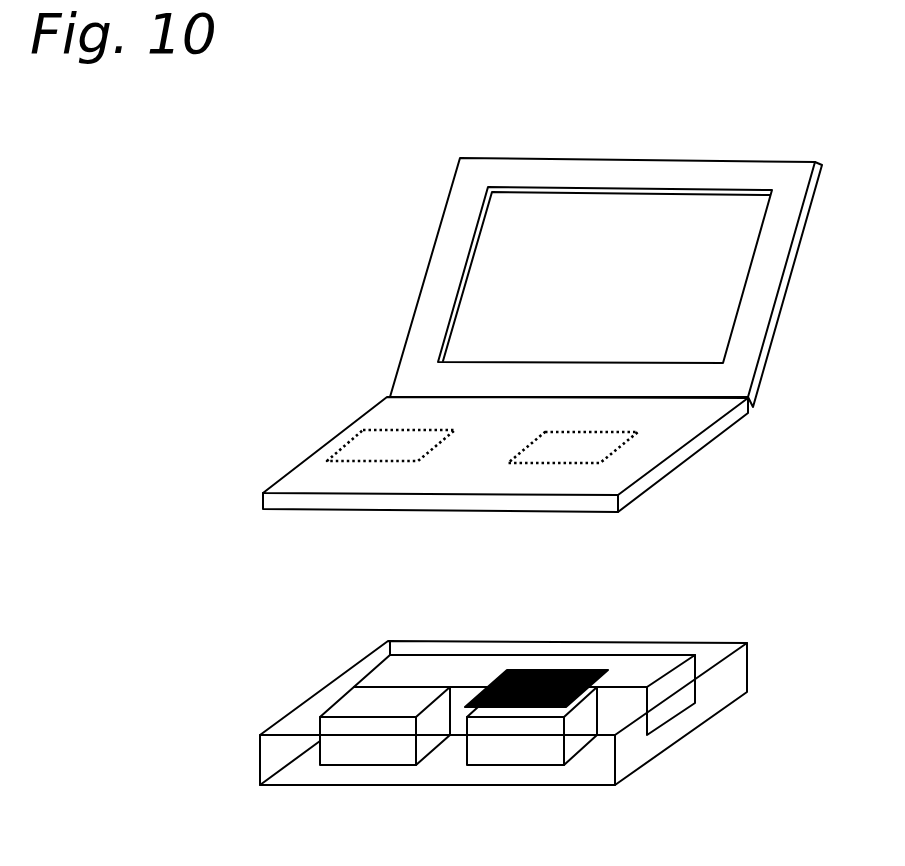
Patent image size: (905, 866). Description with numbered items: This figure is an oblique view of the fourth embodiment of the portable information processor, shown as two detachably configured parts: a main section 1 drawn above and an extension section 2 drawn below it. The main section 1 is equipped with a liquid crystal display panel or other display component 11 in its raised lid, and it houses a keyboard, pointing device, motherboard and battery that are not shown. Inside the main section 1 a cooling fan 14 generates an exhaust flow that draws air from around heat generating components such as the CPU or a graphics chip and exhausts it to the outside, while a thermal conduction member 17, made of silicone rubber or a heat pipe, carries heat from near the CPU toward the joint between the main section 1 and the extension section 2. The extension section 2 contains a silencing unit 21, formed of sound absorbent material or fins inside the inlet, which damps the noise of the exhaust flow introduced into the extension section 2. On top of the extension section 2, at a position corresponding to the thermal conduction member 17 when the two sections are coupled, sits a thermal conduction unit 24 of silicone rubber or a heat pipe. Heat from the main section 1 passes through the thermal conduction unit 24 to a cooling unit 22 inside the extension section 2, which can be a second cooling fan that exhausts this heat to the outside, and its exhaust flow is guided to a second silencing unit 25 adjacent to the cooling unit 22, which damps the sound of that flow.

The main section 1 is at (569, 323).
The display component 11 is at (782, 290).
The cooling fan 14 is at (350, 462).
The thermal conduction member 17 is at (557, 463).
The extension section 2 is at (510, 710).
The silencing unit 21 is at (357, 705).
The cooling unit 22 is at (530, 765).
The thermal conduction unit 24 is at (572, 670).
The second silencing unit 25 is at (442, 667).